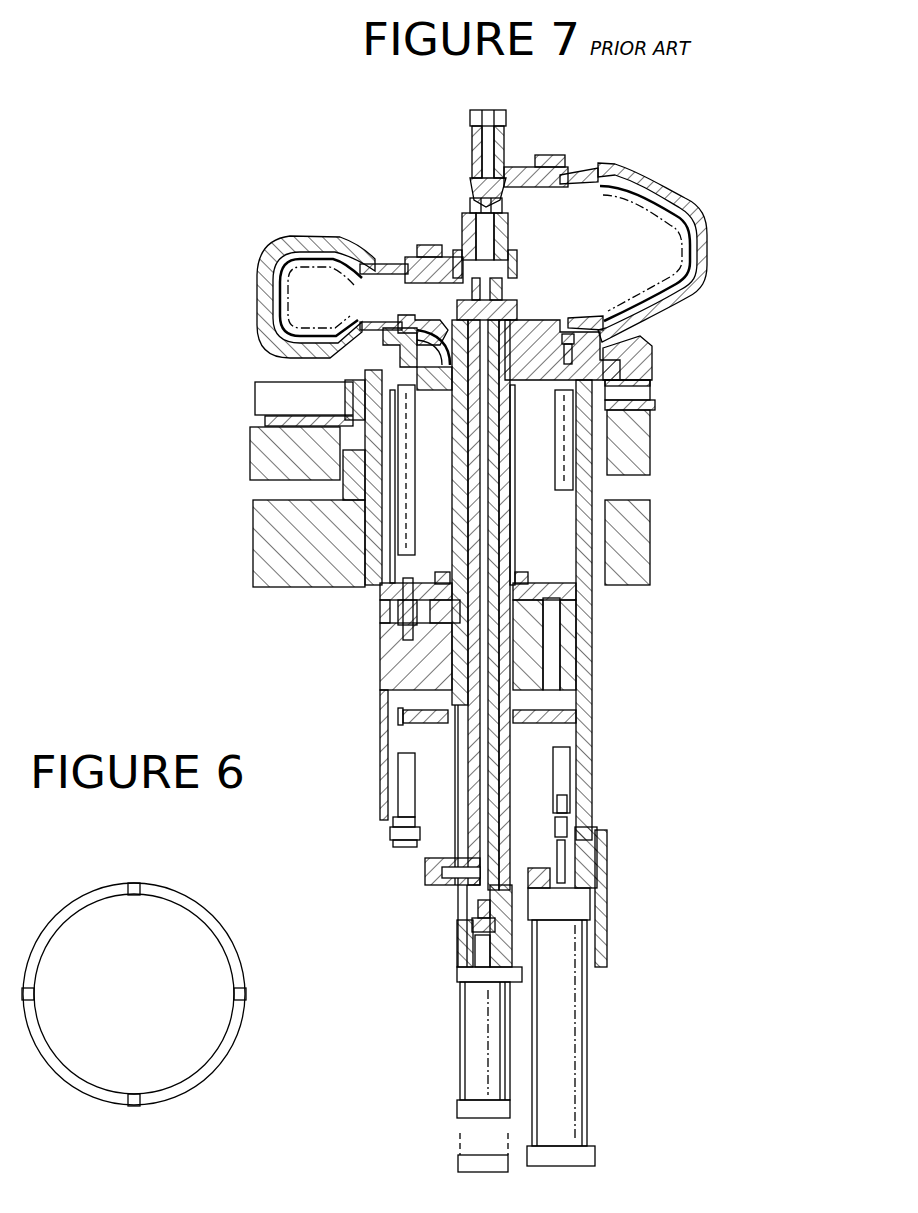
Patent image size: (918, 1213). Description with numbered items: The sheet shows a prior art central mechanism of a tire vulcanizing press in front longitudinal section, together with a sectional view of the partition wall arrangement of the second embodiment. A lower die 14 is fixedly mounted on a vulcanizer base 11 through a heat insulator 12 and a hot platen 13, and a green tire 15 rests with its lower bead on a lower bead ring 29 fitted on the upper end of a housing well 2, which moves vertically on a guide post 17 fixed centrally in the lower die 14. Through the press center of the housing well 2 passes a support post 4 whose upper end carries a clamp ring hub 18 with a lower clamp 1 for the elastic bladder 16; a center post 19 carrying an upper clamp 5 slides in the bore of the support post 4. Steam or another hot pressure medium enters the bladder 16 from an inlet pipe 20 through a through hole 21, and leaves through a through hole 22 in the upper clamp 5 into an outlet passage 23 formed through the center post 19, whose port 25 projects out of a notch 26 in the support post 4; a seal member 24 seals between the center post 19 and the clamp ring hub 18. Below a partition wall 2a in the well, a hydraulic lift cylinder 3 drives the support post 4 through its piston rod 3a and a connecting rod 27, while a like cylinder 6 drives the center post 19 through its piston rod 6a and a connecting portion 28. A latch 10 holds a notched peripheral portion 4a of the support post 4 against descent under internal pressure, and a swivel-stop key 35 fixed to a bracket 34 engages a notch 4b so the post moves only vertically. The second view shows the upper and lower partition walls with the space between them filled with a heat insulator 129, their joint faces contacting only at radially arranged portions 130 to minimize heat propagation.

In FIG. 7, the lower clamp 1 is at (433, 325).
In FIG. 7, the housing well 2 is at (383, 598).
In FIG. 7, the partition wall 2a is at (395, 708).
In FIG. 7, the hydraulic lift cylinder 3 is at (560, 1015).
In FIG. 7, the piston rod 3a is at (582, 855).
In FIG. 7, the support post 4 is at (515, 551).
In FIG. 7, the notched peripheral portion 4a is at (445, 640).
In FIG. 7, the notch 4b is at (518, 528).
In FIG. 7, the upper clamp 5 is at (556, 168).
In FIG. 7, the hydraulic lift cylinder 6 is at (470, 1018).
In FIG. 7, the piston rod 6a is at (475, 950).
In FIG. 7, the latch 10 is at (403, 611).
In FIG. 7, the vulcanizer base 11 is at (650, 440).
In FIG. 7, the heat insulator 12 is at (652, 422).
In FIG. 7, the hot platen 13 is at (650, 395).
In FIG. 7, the lower die 14 is at (620, 360).
In FIG. 7, the green tire 15 is at (702, 225).
In FIG. 7, the bladder 16 is at (605, 186).
In FIG. 7, the guide post 17 is at (352, 487).
In FIG. 7, the clamp ring hub 18 is at (518, 345).
In FIG. 7, the center post 19 is at (497, 503).
In FIG. 7, the inlet pipe 20 is at (408, 780).
In FIG. 7, the through hole 21 is at (398, 358).
In FIG. 7, the through hole 22 is at (468, 240).
In FIG. 7, the hot pressure medium outlet passage 23 is at (472, 500).
In FIG. 7, the seal member 24 is at (503, 318).
In FIG. 7, the port 25 is at (443, 858).
In FIG. 7, the notch 26 is at (428, 505).
In FIG. 7, the connecting rod 27 is at (565, 452).
In FIG. 7, the connecting portion 28 is at (476, 908).
In FIG. 7, the lower bead ring 29 is at (583, 332).
In FIG. 7, the bracket 34 is at (426, 585).
In FIG. 7, the swivel-stop key 35 is at (530, 576).
In FIG. 6, the heat insulator 129 is at (165, 1068).
In FIG. 6, the contact portions 130 is at (134, 883).